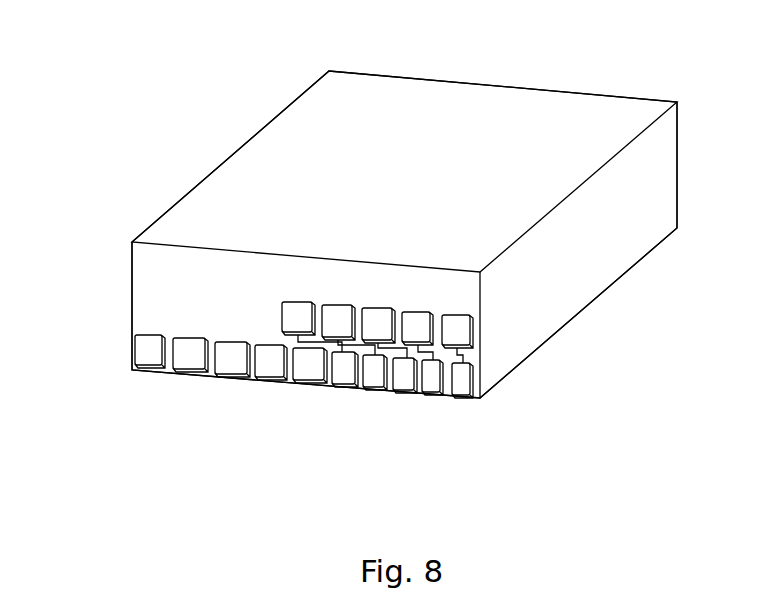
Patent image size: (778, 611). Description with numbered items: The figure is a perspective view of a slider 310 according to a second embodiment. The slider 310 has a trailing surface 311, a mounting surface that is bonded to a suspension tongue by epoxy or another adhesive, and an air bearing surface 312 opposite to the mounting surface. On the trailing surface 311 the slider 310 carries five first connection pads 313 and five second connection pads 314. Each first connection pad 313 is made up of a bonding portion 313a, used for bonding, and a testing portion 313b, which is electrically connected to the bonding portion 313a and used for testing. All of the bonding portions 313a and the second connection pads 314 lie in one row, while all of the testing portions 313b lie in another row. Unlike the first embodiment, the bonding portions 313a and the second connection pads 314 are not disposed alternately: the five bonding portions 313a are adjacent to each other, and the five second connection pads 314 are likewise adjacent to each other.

The slider 310 is at (77, 44).
The trailing surface 311 is at (182, 283).
The air bearing surface 312 is at (292, 187).
The first connection pad 313 is at (527, 470).
The bonding portion 313a is at (471, 383).
The testing portion 313b is at (460, 335).
The second connection pad 314 is at (277, 365).